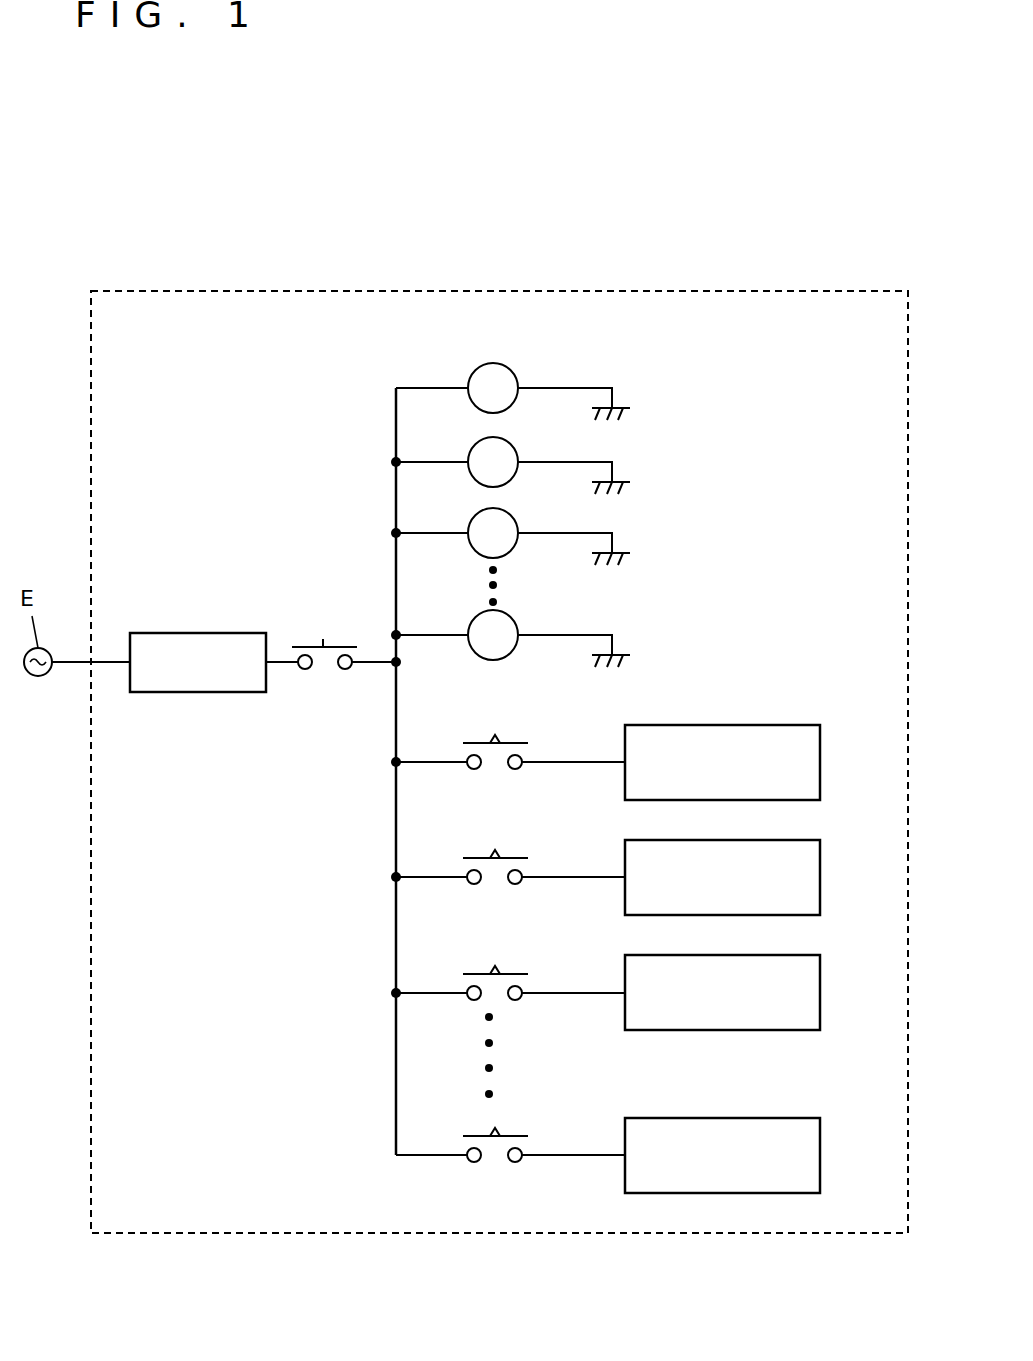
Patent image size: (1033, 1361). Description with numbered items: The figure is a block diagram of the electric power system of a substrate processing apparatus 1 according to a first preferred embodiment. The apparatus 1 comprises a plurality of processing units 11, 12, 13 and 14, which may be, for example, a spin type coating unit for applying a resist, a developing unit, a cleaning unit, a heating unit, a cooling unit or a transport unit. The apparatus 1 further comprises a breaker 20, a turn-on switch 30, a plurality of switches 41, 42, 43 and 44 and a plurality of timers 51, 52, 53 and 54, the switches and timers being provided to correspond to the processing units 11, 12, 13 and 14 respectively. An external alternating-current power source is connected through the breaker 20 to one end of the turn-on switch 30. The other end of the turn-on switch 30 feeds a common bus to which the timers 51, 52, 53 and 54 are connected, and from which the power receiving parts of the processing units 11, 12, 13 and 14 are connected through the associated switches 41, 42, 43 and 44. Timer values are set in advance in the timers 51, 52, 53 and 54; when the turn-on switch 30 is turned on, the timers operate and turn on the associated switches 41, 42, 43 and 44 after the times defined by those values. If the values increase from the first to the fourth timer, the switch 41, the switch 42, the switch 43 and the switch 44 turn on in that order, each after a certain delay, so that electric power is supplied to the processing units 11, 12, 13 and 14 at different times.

The substrate processing apparatus 1 is at (310, 291).
The breaker 20 is at (200, 633).
The turn-on switch 30 is at (305, 647).
The timer 51 is at (513, 372).
The timer 52 is at (513, 446).
The timer 53 is at (513, 517).
The timer 54 is at (513, 619).
The switch 41 is at (513, 741).
The switch 42 is at (513, 856).
The switch 43 is at (513, 972).
The switch 44 is at (513, 1134).
The processing unit 11 is at (822, 753).
The processing unit 12 is at (822, 868).
The processing unit 13 is at (822, 983).
The processing unit 14 is at (822, 1146).